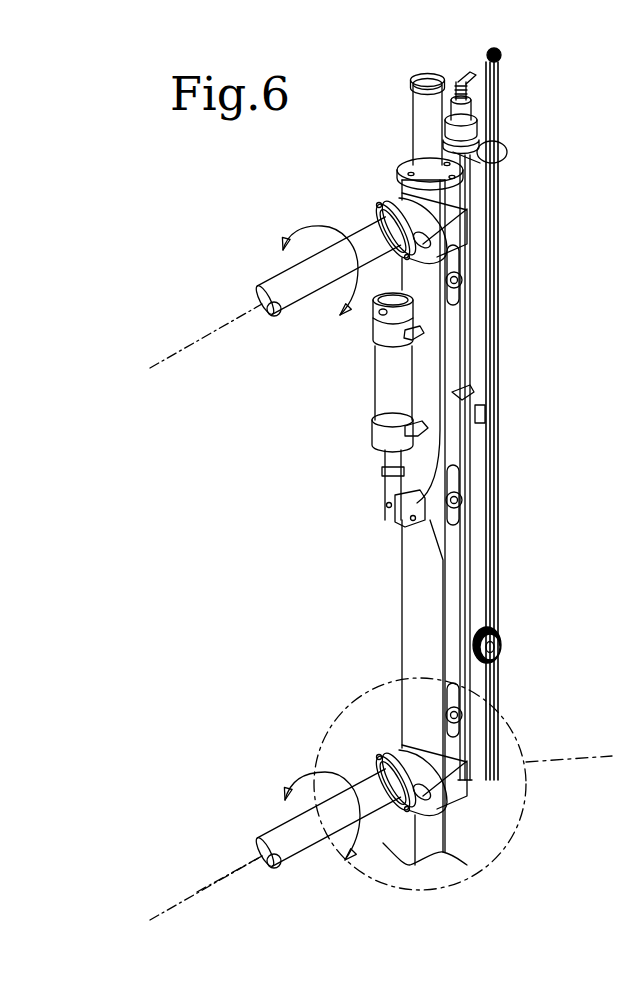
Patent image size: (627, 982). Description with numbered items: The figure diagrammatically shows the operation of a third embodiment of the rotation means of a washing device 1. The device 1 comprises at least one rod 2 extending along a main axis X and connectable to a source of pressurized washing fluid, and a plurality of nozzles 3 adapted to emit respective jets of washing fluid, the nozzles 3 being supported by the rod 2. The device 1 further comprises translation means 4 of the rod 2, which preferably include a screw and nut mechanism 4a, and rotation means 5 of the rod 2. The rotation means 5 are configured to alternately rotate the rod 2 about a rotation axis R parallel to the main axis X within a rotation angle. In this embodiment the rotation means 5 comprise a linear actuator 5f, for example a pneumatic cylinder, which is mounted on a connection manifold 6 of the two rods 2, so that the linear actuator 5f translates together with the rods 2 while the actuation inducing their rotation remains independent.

The device 1 is at (213, 210).
The rod 2 is at (275, 294).
The nozzles 3 is at (282, 268).
The translation means 4 is at (471, 64).
The screw and nut mechanism 4a is at (460, 82).
The rotation means 5 is at (324, 467).
The linear actuator 5f is at (389, 366).
The connection manifold 6 is at (420, 592).